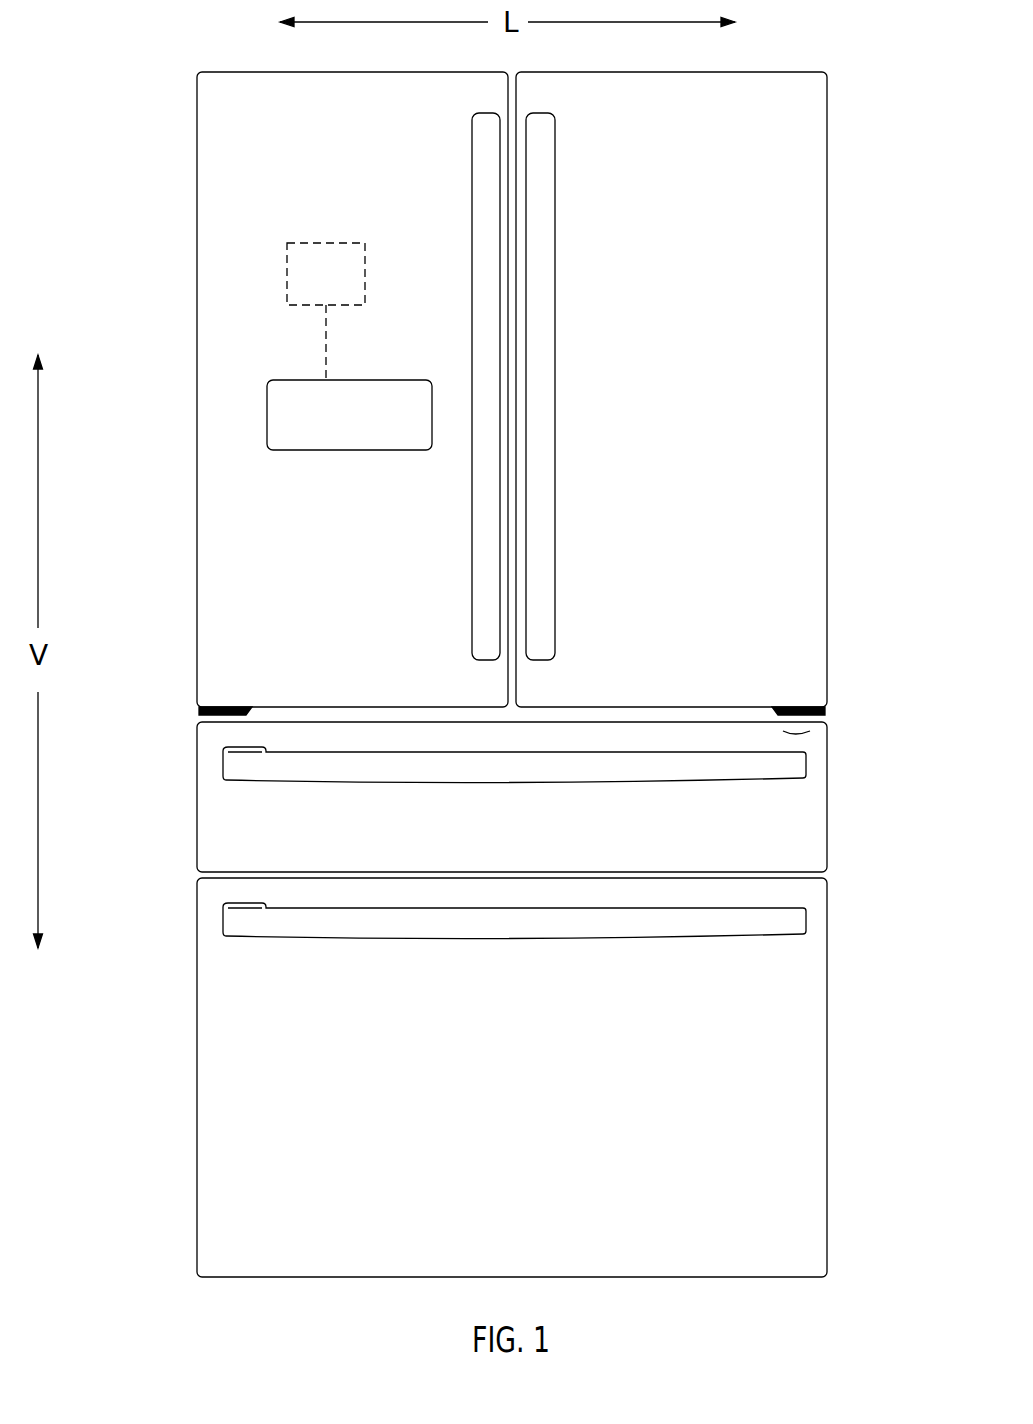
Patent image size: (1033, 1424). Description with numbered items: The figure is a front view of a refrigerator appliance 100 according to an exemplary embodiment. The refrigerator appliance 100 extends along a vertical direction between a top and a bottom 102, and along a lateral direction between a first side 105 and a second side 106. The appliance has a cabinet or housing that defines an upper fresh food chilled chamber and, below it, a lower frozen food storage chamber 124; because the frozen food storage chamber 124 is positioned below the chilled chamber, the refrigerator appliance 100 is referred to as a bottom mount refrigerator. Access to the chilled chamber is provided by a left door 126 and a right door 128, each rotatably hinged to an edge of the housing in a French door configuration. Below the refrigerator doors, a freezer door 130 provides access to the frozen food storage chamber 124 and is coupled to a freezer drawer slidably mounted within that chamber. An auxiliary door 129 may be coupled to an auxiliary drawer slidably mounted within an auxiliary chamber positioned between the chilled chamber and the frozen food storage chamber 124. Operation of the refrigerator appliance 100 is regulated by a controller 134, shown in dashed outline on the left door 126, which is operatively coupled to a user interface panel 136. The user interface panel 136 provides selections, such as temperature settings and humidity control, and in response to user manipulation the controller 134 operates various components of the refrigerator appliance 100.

The refrigerator appliance 100 is at (186, 66).
The bottom 102 is at (222, 1282).
The first side 105 is at (190, 1016).
The second side 106 is at (838, 1145).
The frozen food storage chamber 124 is at (722, 1210).
The left door 126 is at (223, 130).
The right door 128 is at (777, 295).
The auxiliary door 129 is at (782, 818).
The freezer door 130 is at (777, 995).
The controller 134 is at (287, 263).
The user interface panel 136 is at (282, 407).